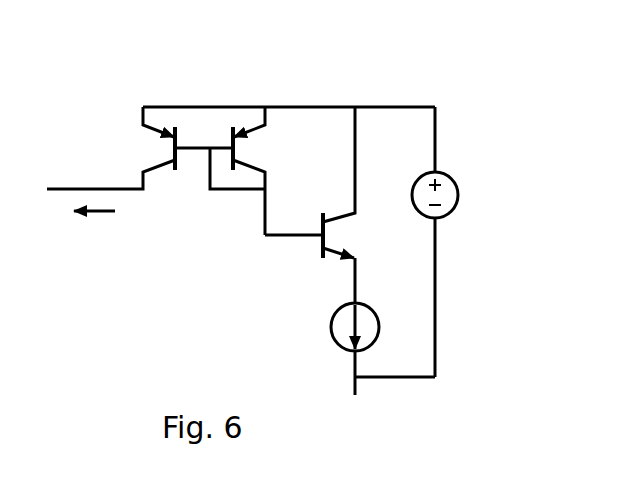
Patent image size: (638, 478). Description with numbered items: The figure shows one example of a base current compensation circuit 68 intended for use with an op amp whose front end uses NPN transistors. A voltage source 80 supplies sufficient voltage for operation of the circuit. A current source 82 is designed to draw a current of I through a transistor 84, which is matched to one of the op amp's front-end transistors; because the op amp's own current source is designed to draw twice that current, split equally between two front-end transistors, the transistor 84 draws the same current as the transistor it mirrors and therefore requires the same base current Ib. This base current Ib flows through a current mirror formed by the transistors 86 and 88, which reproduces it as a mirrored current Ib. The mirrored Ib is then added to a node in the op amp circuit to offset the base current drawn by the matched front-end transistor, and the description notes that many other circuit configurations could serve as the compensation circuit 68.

The base current compensation circuit 68 is at (353, 60).
The transistor 88 is at (138, 148).
The transistor 86 is at (268, 148).
The transistor 84 is at (360, 238).
The current source 82 is at (332, 326).
The voltage source 80 is at (452, 207).